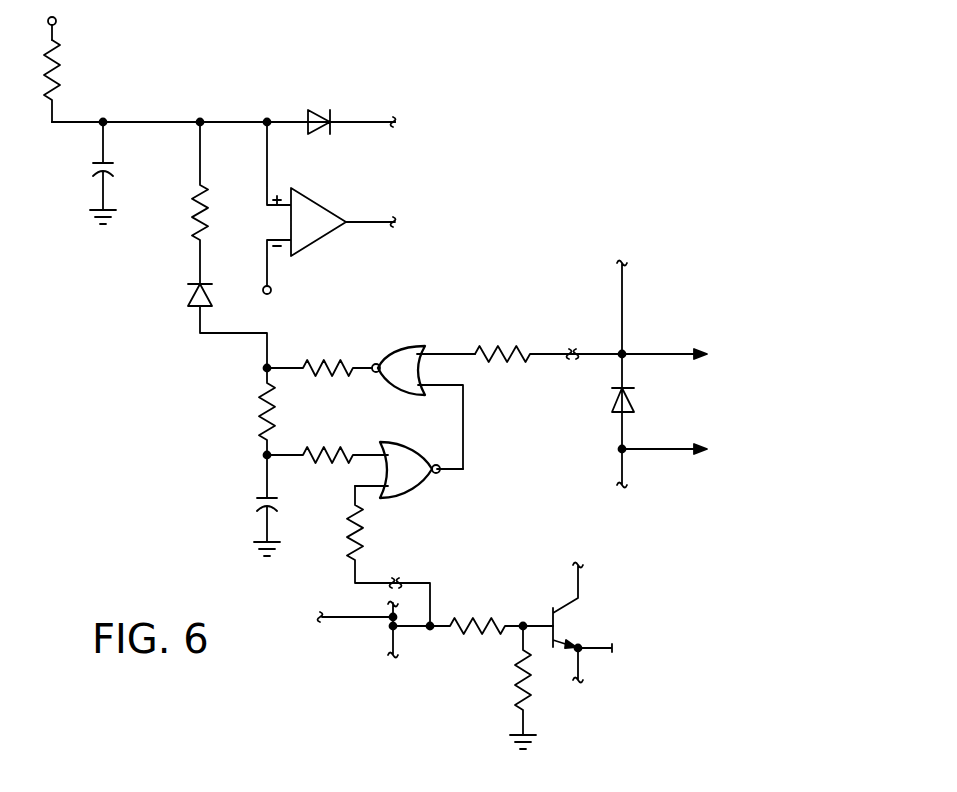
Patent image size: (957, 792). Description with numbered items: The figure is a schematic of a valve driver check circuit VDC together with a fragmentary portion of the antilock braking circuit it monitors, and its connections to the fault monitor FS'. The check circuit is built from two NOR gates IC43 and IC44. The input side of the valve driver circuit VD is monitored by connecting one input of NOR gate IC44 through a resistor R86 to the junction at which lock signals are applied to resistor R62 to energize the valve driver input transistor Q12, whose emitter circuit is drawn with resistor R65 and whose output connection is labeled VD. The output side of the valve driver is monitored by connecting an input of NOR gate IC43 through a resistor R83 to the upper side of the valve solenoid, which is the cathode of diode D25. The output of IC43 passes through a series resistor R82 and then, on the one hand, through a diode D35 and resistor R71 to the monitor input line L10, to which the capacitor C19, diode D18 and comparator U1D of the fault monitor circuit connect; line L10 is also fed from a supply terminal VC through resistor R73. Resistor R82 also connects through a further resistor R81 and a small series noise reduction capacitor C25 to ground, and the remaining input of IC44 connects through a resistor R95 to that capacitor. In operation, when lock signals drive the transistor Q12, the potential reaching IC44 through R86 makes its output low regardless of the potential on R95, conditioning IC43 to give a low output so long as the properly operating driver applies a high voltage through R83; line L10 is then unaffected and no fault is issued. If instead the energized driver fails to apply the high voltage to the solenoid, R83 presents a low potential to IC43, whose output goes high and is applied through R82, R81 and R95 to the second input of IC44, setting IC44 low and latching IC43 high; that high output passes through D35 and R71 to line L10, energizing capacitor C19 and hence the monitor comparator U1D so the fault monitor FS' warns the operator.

The supply voltage terminal VC is at (59, 20).
The resistor R73 is at (31, 81).
The monitor input line L10 is at (163, 122).
The capacitor C19 is at (125, 173).
The resistor R71 is at (181, 202).
The diode D35 is at (206, 326).
The diode D18 is at (331, 136).
The comparator U1D is at (329, 208).
The fault monitor FS' is at (365, 268).
The valve driver check circuit VDC is at (205, 400).
The series resistor R82 is at (318, 356).
The NOR gate IC43 is at (423, 395).
The resistor R83 is at (548, 365).
The resistor R81 is at (248, 413).
The resistor R95 is at (327, 443).
The NOR gate IC44 is at (409, 458).
The noise reduction capacitor C25 is at (245, 505).
The resistor R86 is at (388, 556).
The resistor R62 is at (491, 614).
The resistor R65 is at (501, 687).
The valve driver input transistor Q12 is at (585, 623).
The valve driver circuit VD is at (609, 668).
The diode D25 is at (712, 374).